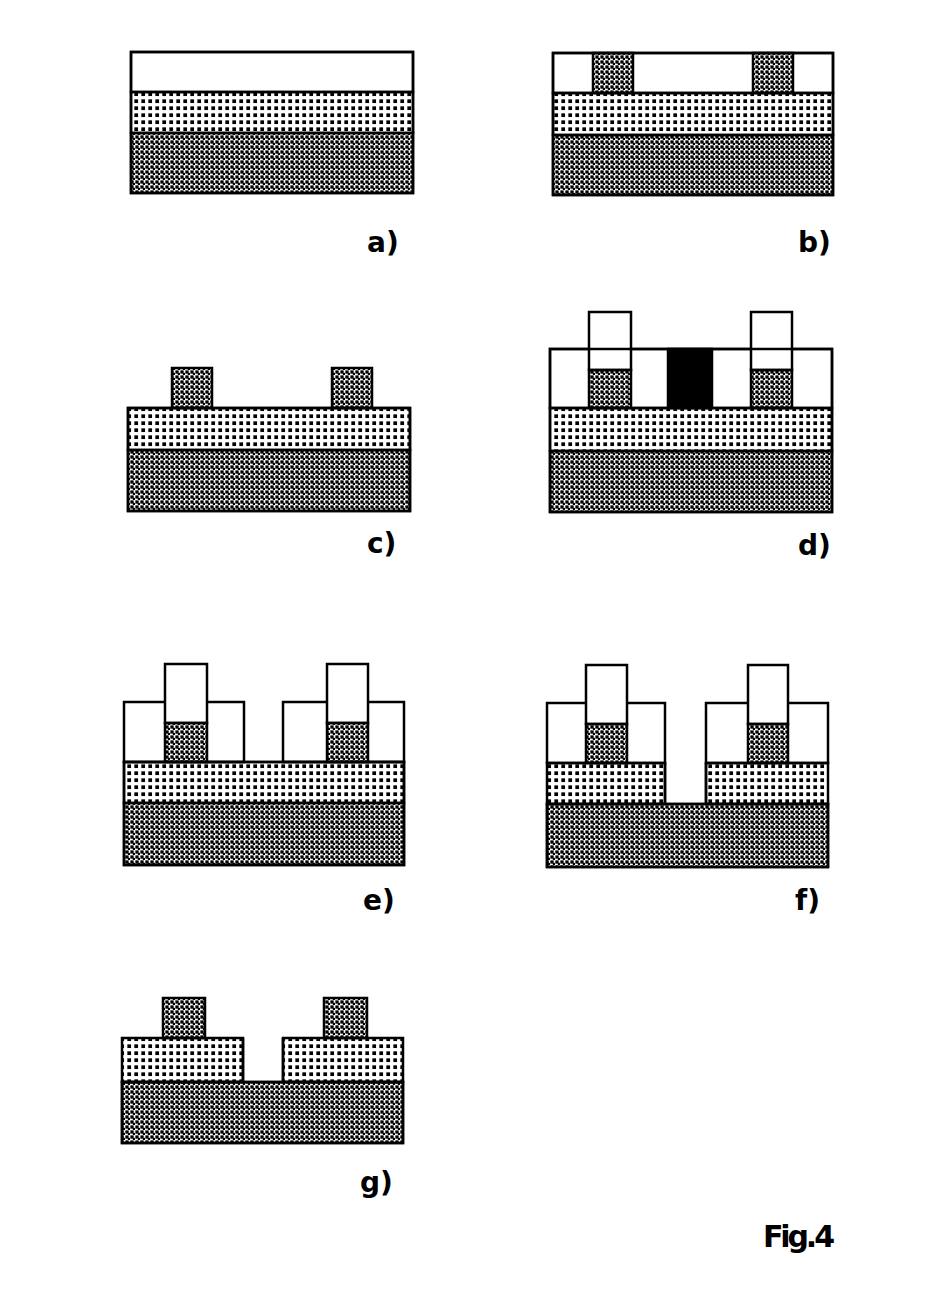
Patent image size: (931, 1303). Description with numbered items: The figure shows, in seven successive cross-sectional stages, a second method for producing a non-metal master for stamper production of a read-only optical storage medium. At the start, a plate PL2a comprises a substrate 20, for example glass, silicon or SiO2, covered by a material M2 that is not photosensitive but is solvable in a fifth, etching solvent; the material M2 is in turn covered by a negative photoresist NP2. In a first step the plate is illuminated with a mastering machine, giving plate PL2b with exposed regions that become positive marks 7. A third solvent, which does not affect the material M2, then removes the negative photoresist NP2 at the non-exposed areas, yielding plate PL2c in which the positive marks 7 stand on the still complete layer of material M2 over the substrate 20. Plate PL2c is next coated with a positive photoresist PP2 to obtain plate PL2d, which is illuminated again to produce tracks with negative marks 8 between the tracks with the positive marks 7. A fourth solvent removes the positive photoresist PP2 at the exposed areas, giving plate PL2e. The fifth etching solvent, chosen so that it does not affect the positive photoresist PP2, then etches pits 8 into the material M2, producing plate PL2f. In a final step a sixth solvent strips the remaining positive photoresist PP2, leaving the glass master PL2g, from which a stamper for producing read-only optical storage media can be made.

The positive marks 7 is at (478, 545).
The negative marks 8 is at (477, 715).
The substrate 20 is at (140, 162).
The material M2 is at (140, 118).
The negative photoresist NP2 is at (147, 73).
The positive photoresist PP2 is at (573, 385).
The plate PL2a is at (162, 198).
The plate PL2b is at (587, 200).
The plate PL2c is at (170, 517).
The plate PL2d is at (557, 520).
The plate PL2e is at (138, 868).
The plate PL2f is at (565, 872).
The glass master PL2g is at (135, 1155).